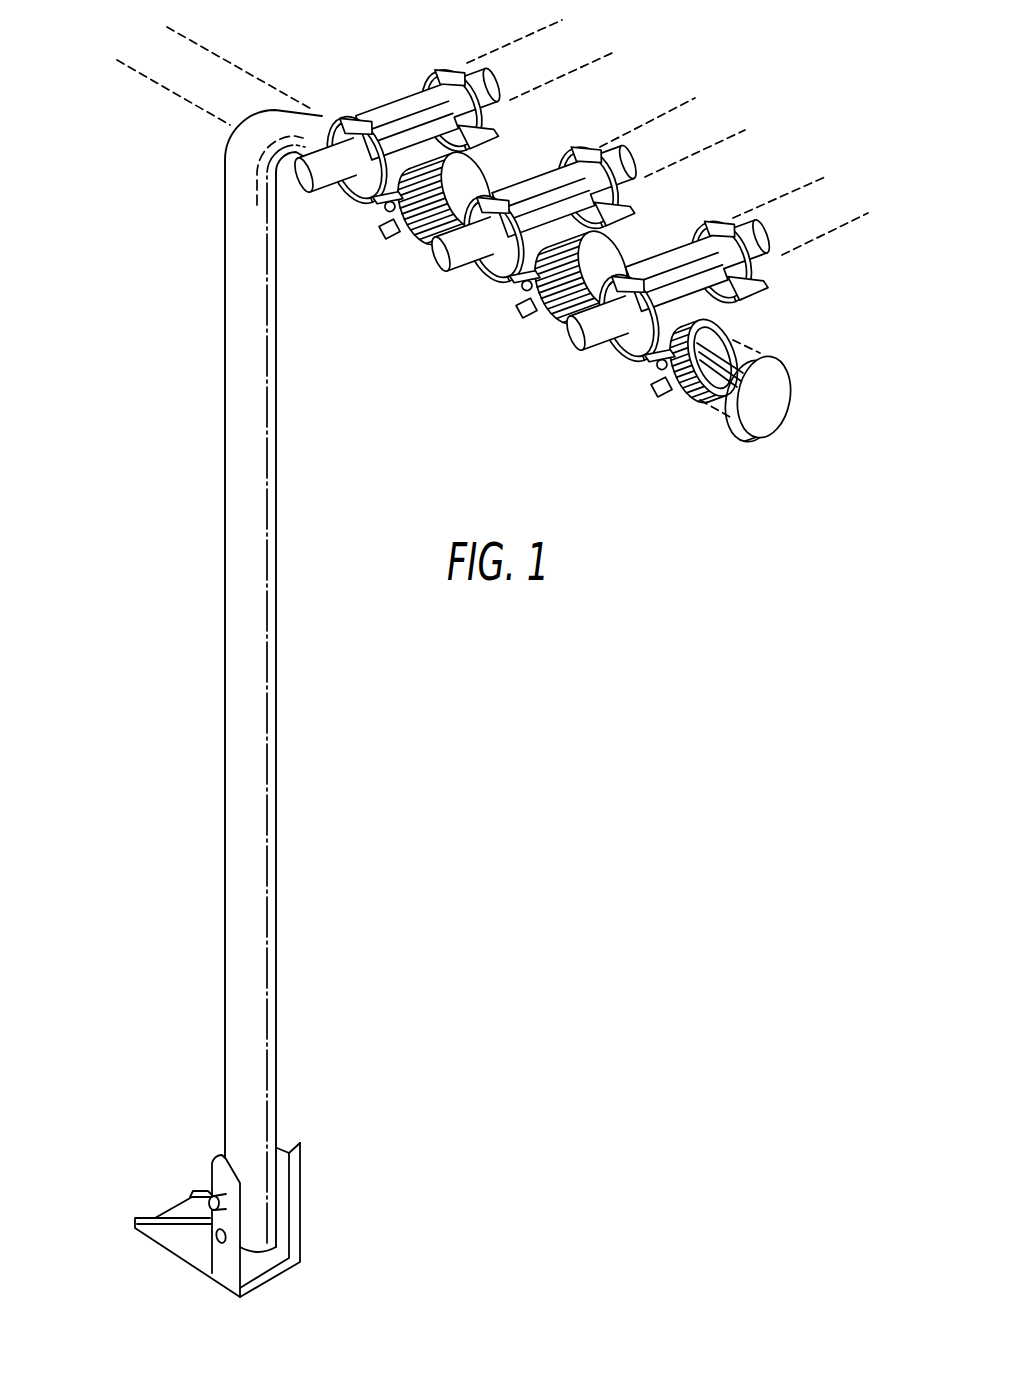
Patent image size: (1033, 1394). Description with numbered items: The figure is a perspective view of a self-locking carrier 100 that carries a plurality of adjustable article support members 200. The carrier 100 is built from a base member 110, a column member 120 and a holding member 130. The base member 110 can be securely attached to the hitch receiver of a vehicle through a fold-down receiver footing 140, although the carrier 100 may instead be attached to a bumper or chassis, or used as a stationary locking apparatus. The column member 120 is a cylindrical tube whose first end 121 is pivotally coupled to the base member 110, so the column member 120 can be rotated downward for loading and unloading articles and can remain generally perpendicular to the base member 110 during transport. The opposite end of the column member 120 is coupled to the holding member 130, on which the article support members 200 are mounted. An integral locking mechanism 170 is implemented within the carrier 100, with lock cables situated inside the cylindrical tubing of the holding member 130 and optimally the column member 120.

The carrier 100 is at (465, 671).
The base member 110 is at (362, 1250).
The column member 120 is at (230, 612).
The first end 121 is at (260, 1214).
The holding member 130 is at (428, 240).
The fold-down receiver footing 140 is at (143, 1232).
The locking mechanism 170 is at (700, 415).
The article support members 200 is at (374, 76).